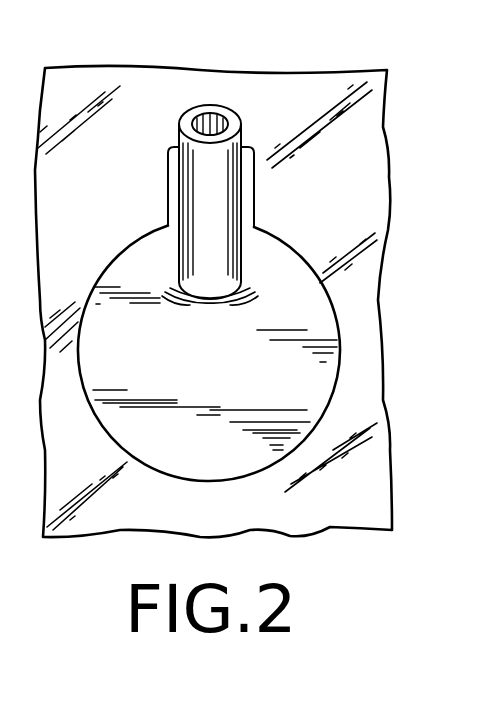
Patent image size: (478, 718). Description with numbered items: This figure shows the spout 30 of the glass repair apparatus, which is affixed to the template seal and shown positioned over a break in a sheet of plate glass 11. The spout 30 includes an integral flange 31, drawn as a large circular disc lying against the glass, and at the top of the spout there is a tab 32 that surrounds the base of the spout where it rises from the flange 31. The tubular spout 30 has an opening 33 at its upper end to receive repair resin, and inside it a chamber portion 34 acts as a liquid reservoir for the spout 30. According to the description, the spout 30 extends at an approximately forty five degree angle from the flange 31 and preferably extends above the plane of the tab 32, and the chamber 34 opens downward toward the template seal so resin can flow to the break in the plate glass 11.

The plate glass 11 is at (340, 507).
The spout 30 is at (241, 245).
The flange 31 is at (110, 267).
The tab 32 is at (176, 158).
The opening 33 is at (198, 124).
The chamber portion 34 is at (206, 176).